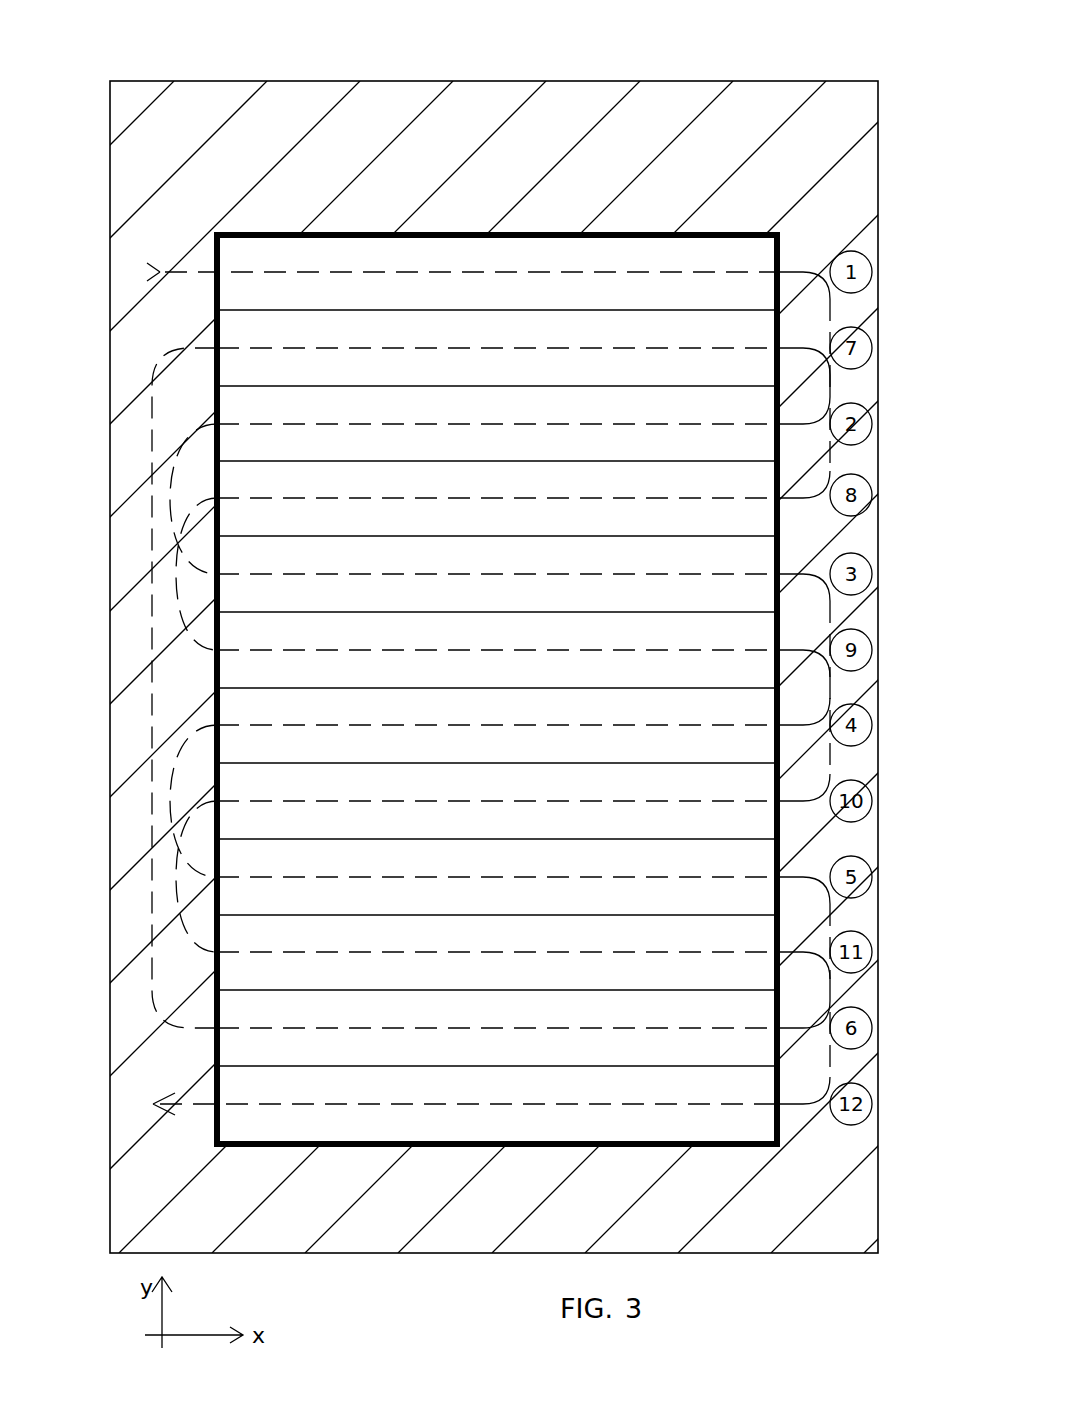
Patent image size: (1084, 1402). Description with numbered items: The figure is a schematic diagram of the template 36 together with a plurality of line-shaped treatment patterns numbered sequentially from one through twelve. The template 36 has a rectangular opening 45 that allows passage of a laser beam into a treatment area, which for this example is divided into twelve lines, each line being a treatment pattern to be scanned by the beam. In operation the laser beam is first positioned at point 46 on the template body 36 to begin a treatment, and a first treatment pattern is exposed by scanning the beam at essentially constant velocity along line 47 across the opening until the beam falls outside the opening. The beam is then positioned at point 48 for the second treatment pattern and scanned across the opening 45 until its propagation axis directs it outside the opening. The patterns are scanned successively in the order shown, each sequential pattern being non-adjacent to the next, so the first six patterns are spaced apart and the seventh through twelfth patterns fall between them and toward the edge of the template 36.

The template 36 is at (452, 81).
The rectangular opening 45 is at (262, 234).
The point 46 is at (160, 272).
The line 47 is at (512, 272).
The point 48 is at (840, 472).